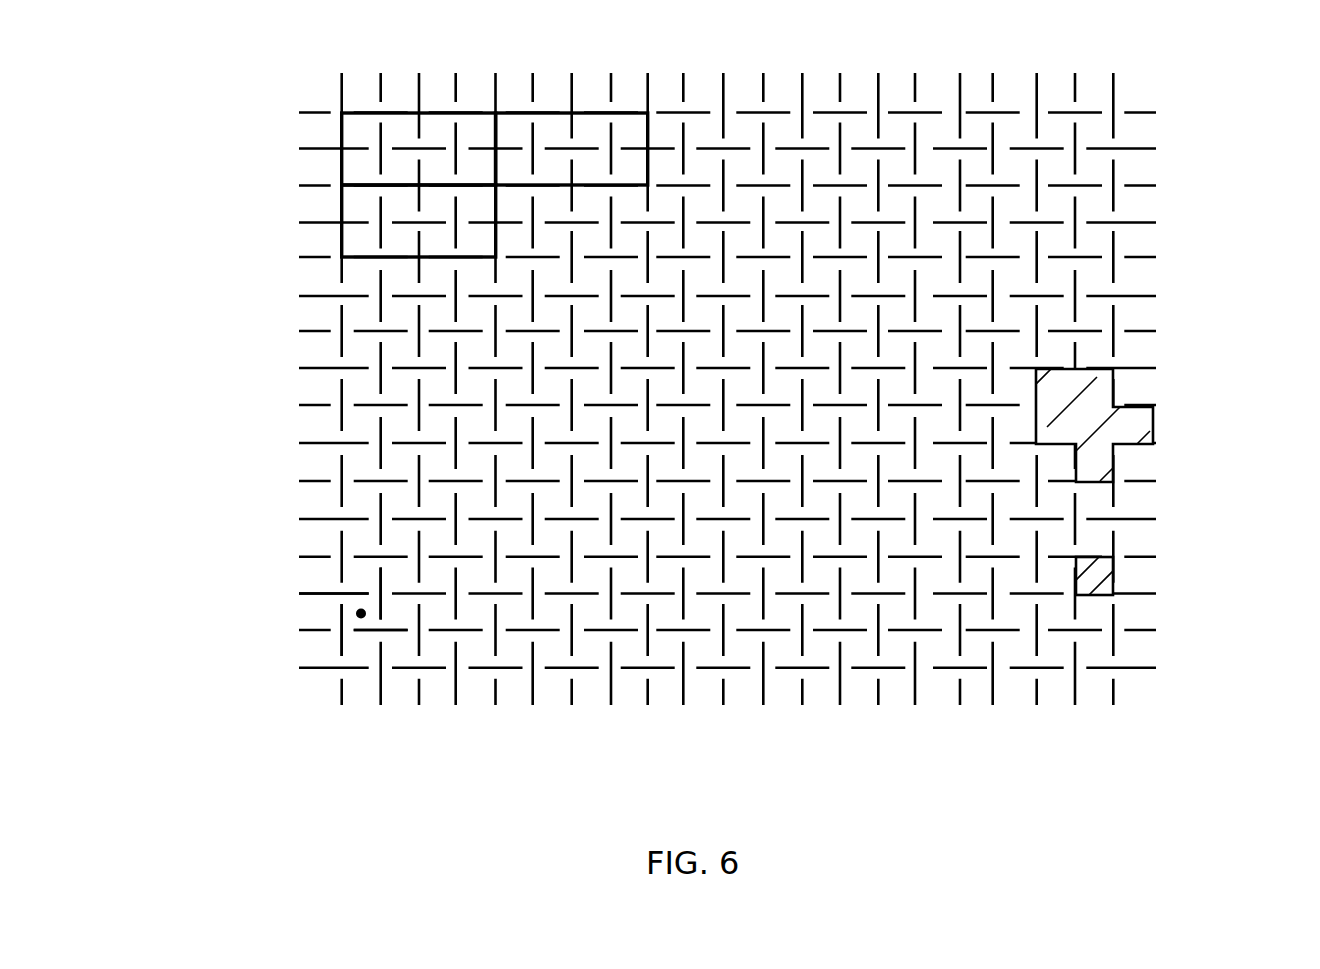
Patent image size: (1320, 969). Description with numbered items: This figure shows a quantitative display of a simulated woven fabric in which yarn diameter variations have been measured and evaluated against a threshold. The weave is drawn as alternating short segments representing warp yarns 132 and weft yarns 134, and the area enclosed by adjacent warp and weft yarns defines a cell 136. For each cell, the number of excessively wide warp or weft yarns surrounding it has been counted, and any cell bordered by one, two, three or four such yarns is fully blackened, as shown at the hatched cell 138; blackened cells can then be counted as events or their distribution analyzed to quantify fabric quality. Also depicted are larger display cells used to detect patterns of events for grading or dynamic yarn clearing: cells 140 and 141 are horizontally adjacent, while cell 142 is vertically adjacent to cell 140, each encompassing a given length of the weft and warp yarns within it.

The warp yarn 132 is at (366, 594).
The weft yarn 134 is at (342, 613).
The cell 136 is at (357, 619).
The blackened cell 138 is at (1113, 580).
The display cell 140 is at (400, 113).
The display cell 141 is at (552, 113).
The display cell 142 is at (342, 222).